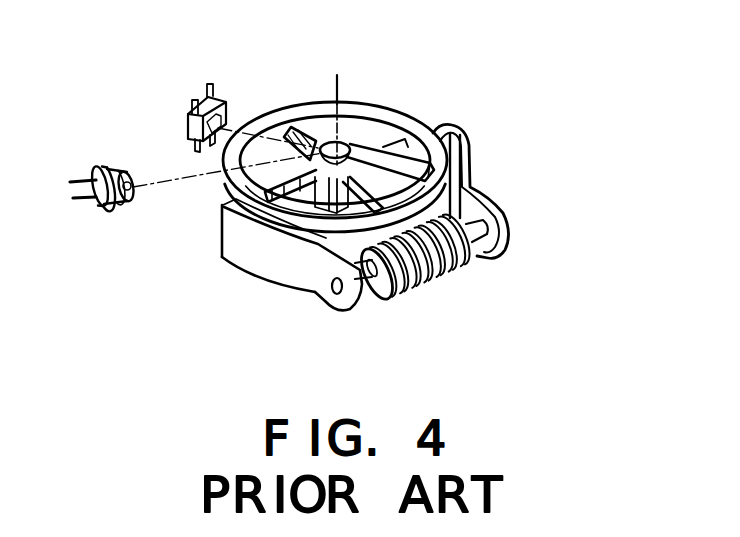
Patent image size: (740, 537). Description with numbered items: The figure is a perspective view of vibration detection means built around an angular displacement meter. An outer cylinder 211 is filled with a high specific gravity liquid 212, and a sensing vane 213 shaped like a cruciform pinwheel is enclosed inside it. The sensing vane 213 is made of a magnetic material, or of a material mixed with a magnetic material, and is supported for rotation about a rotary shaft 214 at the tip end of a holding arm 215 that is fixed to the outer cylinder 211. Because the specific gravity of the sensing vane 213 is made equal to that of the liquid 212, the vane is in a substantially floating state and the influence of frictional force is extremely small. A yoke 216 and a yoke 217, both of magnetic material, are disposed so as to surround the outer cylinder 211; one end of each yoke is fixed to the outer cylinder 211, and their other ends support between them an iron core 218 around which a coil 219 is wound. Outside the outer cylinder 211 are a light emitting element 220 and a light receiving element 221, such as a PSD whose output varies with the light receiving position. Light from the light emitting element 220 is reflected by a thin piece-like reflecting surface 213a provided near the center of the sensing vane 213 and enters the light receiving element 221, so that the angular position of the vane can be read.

The outer cylinder 211 is at (415, 125).
The high specific gravity liquid 212 is at (382, 108).
The sensing vane 213 is at (316, 128).
The reflecting surface 213a is at (290, 128).
The rotary shaft 214 is at (340, 75).
The holding arm 215 is at (428, 167).
The yoke 216 is at (500, 212).
The yoke 217 is at (253, 258).
The iron core 218 is at (371, 278).
The coil 219 is at (438, 280).
The light emitting element 220 is at (113, 207).
The light receiving element 221 is at (186, 116).